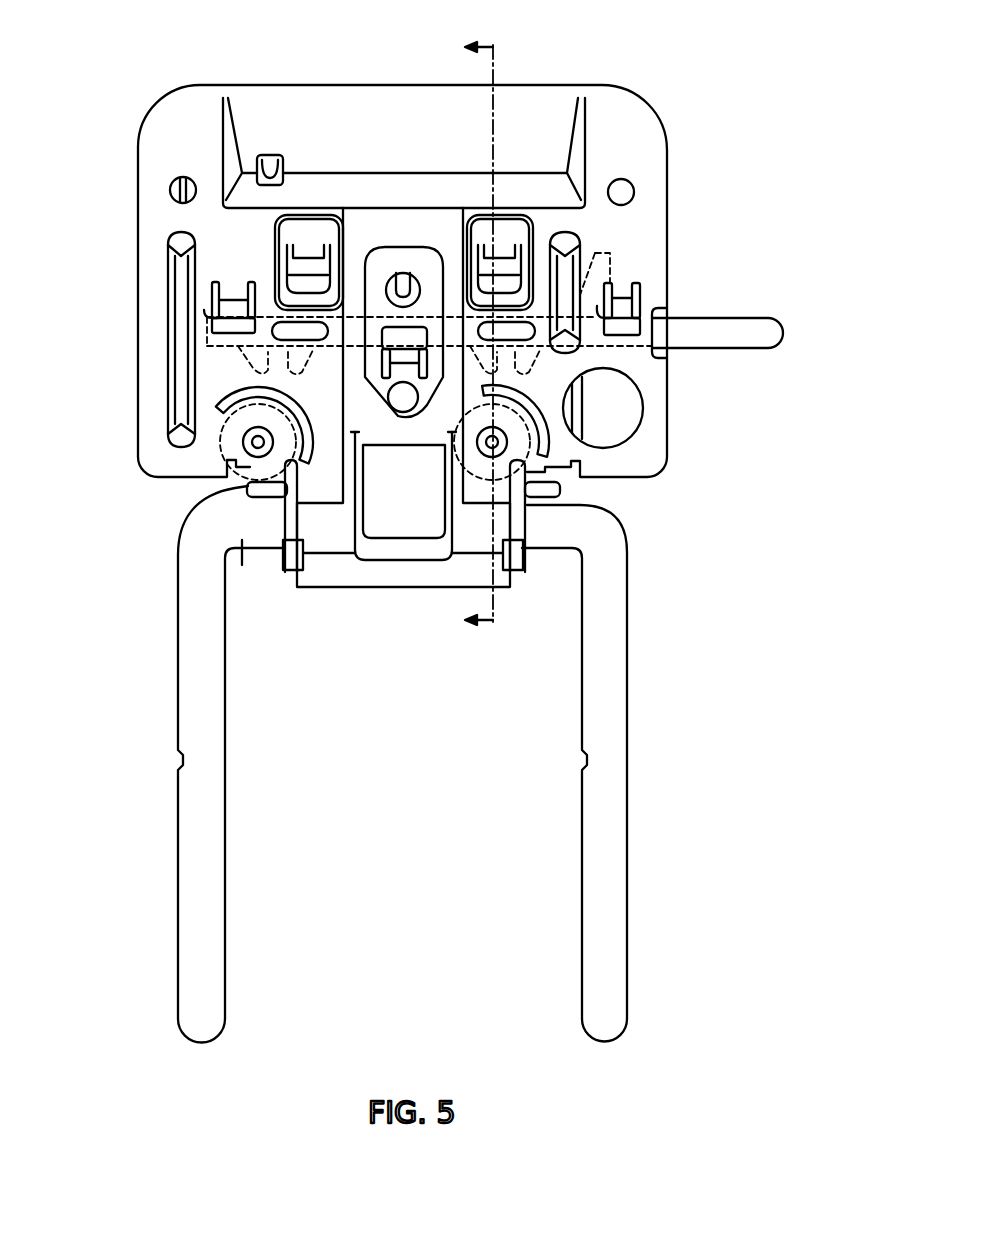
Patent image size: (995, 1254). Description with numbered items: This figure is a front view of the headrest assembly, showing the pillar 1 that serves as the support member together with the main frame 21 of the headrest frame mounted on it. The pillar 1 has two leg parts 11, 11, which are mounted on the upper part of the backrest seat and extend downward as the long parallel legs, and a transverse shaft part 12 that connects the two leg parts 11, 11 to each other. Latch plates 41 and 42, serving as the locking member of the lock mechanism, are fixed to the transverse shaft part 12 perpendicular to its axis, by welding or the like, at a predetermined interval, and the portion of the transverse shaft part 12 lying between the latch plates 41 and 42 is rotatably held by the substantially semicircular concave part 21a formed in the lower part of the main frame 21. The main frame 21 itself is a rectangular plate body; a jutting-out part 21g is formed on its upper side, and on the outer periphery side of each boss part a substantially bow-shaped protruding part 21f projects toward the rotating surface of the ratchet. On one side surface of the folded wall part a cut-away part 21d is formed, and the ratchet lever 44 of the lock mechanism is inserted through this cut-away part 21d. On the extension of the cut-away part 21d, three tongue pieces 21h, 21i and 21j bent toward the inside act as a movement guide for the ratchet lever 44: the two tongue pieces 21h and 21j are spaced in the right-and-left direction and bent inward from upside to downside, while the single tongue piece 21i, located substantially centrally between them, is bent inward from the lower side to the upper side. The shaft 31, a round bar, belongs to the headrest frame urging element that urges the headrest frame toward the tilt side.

The pillar 1 is at (640, 617).
The leg part 11 is at (620, 680).
The transverse shaft part 12 is at (242, 565).
The main frame 21 is at (637, 89).
The substantially semicircular concave part 21a is at (468, 545).
The cut-away part 21d is at (663, 353).
The substantially bow-shaped protruding part 21f is at (552, 443).
The jutting-out part 21g is at (325, 108).
The tongue piece 21h is at (215, 290).
The tongue piece 21i is at (403, 357).
The tongue piece 21j is at (622, 297).
The shaft 31 is at (250, 484).
The latch plate 41 is at (283, 546).
The latch plate 42 is at (522, 528).
The ratchet lever 44 is at (753, 327).